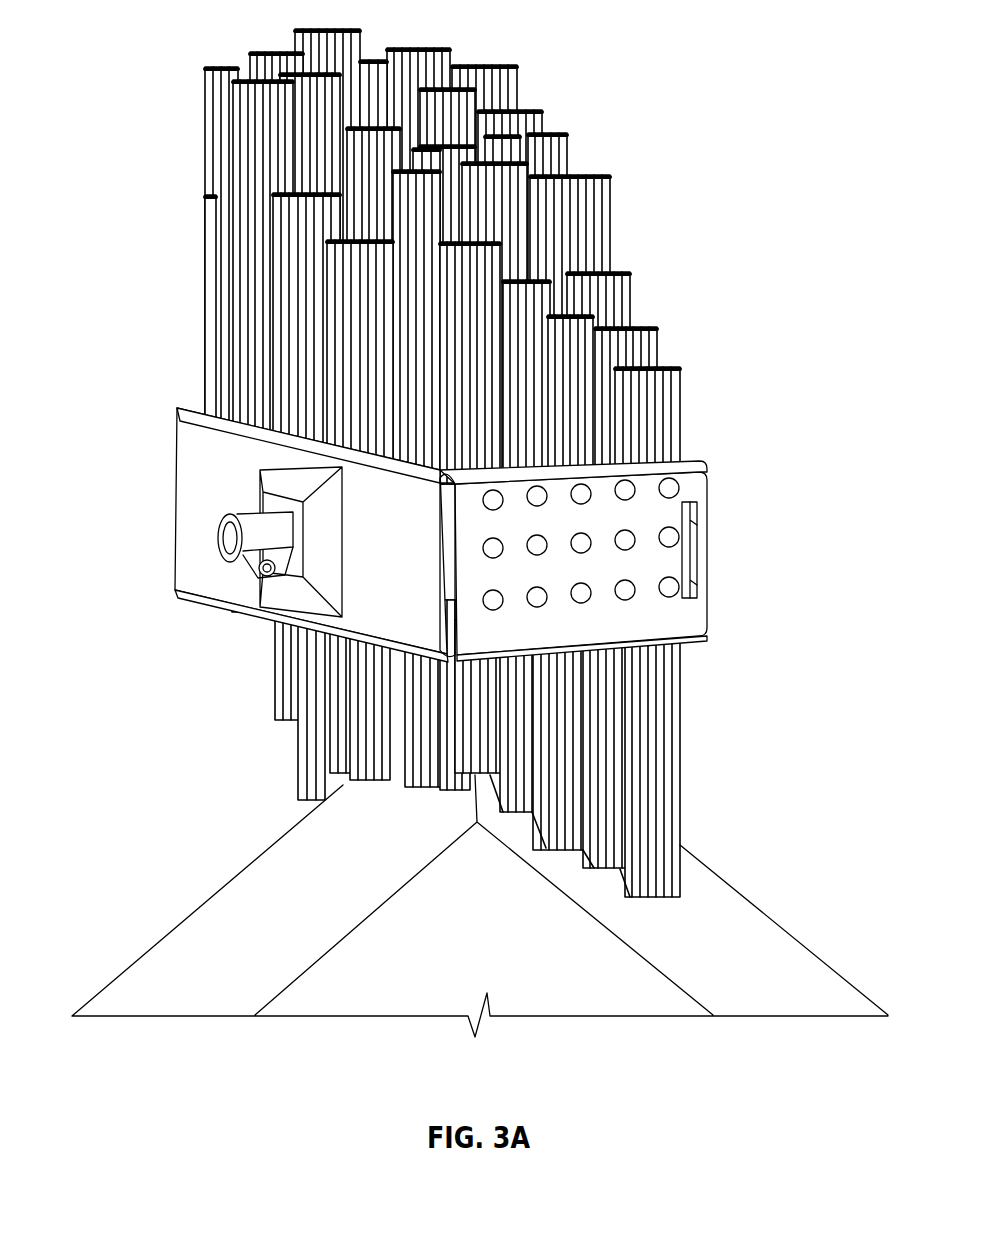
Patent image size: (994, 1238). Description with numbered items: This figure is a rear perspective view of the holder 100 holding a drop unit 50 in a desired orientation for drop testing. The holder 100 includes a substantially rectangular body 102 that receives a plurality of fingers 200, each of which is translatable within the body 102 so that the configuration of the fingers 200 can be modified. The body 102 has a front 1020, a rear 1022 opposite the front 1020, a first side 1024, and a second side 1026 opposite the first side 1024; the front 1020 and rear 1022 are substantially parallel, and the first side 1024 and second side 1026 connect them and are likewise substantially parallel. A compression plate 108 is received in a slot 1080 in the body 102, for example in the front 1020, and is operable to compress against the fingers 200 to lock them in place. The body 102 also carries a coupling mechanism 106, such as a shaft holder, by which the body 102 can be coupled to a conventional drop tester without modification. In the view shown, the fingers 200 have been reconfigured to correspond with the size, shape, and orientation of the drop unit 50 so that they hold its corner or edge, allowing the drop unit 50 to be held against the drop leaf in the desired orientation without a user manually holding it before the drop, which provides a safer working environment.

The drop unit 50 is at (763, 925).
The holder 100 is at (440, 499).
The body 102 is at (253, 499).
The coupling mechanism 106 is at (252, 522).
The compression plate 108 is at (737, 561).
The fingers 200 is at (307, 205).
The front 1020 is at (680, 455).
The rear 1022 is at (183, 568).
The first side 1024 is at (620, 543).
The second side 1026 is at (193, 410).
The slot 1080 is at (693, 583).